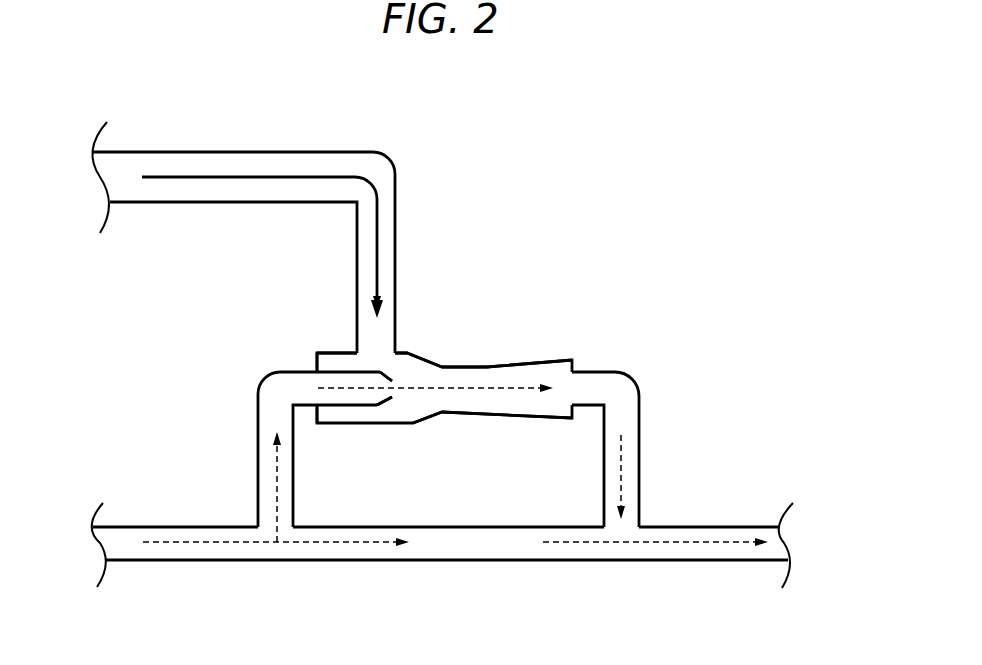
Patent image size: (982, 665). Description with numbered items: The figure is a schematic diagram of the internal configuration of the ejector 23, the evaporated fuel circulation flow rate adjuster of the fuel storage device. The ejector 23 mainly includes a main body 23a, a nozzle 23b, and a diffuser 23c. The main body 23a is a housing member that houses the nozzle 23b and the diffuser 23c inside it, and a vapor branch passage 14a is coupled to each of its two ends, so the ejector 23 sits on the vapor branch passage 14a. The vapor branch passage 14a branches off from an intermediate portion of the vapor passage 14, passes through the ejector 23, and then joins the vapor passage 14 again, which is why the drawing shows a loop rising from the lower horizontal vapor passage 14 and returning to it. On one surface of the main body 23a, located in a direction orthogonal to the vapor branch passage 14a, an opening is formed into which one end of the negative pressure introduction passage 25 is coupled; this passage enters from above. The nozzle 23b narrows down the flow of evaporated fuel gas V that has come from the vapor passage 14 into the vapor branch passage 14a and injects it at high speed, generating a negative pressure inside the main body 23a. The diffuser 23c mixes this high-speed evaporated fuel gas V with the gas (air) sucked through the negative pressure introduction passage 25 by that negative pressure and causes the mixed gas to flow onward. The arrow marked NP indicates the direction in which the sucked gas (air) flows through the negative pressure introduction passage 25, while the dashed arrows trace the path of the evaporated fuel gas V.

The negative pressure introduction passage 25 is at (256, 151).
The direction of sucked gas flow NP is at (373, 183).
The ejector 23 is at (459, 270).
The main body 23a is at (337, 352).
The nozzle 23b is at (381, 378).
The diffuser 23c is at (478, 363).
The vapor branch passage 14a is at (262, 378).
The vapor passage 14 is at (140, 526).
The evaporated fuel gas V is at (500, 380).